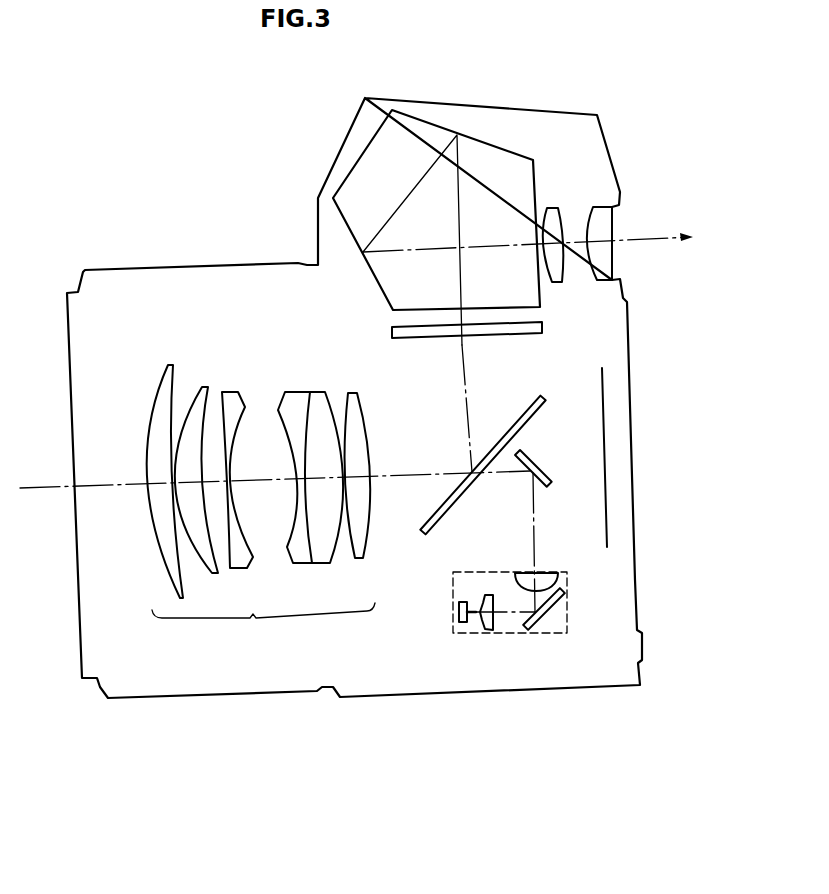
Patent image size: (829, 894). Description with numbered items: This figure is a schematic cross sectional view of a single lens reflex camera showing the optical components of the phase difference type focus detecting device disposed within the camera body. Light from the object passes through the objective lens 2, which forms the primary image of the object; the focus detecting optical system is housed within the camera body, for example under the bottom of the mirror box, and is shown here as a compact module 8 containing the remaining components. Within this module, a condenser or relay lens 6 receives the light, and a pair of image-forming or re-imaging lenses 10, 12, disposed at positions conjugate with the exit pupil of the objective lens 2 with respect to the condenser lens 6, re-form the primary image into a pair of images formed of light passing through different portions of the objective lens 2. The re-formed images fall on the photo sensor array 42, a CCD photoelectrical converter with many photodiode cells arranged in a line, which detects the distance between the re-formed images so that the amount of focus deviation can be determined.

The objective lens 2 is at (253, 618).
The condenser lens 6 is at (547, 571).
The focus detecting optical module 8 is at (567, 602).
The image-forming lens 10 is at (523, 633).
The image-forming lens 12 is at (493, 630).
The photo sensor array 42 is at (467, 624).